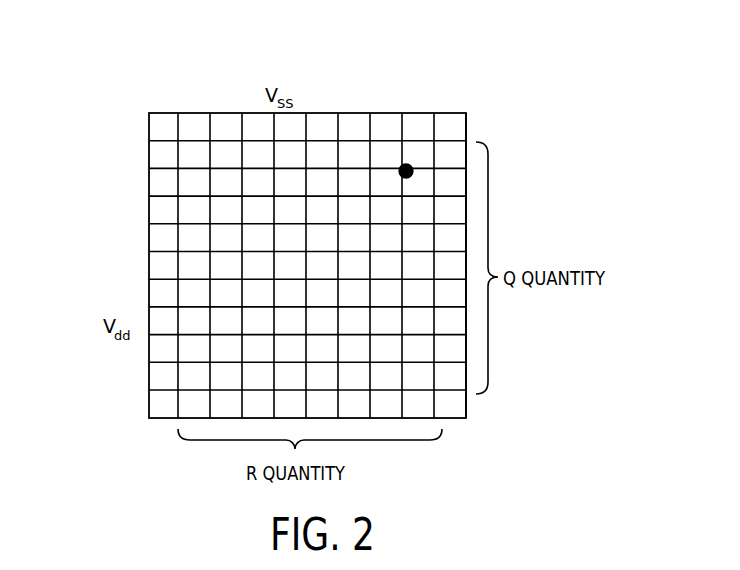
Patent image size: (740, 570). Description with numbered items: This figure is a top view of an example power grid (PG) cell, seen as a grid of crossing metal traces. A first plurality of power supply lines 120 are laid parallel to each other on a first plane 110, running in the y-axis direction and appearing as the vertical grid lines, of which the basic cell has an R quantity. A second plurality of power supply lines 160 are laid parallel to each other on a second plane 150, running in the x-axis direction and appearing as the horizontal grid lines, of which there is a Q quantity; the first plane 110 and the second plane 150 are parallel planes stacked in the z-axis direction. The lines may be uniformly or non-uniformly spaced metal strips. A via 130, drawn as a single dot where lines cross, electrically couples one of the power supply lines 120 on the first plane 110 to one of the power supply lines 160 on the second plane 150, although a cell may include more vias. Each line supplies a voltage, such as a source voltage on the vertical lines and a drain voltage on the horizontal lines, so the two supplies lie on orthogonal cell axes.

The first plane 110 is at (390, 113).
The first plurality of power supply lines 120 is at (175, 135).
The via 130 is at (403, 168).
The second plane 150 is at (453, 113).
The second plurality of power supply lines 160 is at (172, 141).